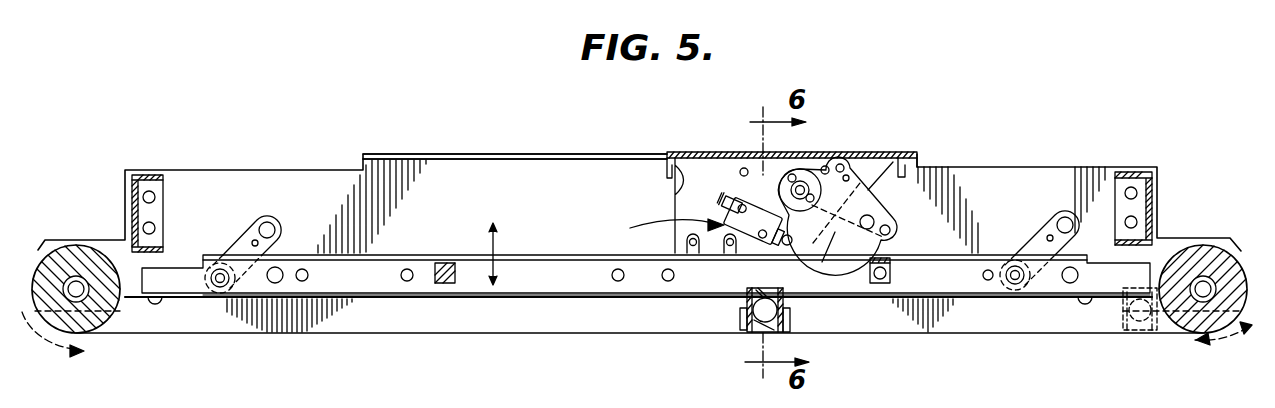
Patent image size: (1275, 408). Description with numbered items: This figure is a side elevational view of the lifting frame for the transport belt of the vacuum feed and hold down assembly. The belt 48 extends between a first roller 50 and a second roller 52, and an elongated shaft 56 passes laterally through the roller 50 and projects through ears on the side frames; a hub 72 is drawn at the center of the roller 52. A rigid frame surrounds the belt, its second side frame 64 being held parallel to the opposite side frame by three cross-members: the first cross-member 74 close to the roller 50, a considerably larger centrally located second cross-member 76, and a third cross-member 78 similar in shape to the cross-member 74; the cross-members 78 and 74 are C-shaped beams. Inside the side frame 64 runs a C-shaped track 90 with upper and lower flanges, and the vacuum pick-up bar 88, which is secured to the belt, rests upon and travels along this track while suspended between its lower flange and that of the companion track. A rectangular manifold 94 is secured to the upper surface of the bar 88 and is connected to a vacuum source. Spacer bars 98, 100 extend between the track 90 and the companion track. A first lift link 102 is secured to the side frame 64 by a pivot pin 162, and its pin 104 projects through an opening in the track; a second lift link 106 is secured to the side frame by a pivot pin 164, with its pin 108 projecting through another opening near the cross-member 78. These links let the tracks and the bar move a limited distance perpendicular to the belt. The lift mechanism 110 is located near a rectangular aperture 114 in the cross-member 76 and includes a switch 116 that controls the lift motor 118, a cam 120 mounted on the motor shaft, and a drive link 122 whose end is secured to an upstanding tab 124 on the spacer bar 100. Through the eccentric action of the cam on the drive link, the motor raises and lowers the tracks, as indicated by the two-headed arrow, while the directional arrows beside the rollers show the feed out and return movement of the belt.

The belt 48 is at (396, 330).
The first roller 50 is at (1208, 248).
The second roller 52 is at (95, 318).
The elongated shaft 56 is at (1200, 298).
The second side frame 64 is at (597, 196).
The roller shaft 72 is at (77, 277).
The first cross-member 74 is at (1152, 201).
The second cross-member 76 is at (699, 152).
The third cross-member 78 is at (130, 210).
The vacuum pick-up bar 88 is at (784, 333).
The C-shaped track 90 is at (826, 284).
The rectangular manifold 94 is at (745, 318).
The spacer bar 98 is at (447, 262).
The spacer bar 100 is at (892, 275).
The first lift link 102 is at (1034, 240).
The pin 104 is at (1018, 290).
The second lift link 106 is at (247, 243).
The pin 108 is at (220, 288).
The lift mechanism 110 is at (664, 230).
The rectangular aperture 114 is at (678, 188).
The switch 116 is at (737, 194).
The lift motor 118 is at (838, 249).
The cam 120 is at (803, 169).
The drive link 122 is at (868, 160).
The upstanding tab 124 is at (887, 247).
The pivot pin 162 is at (1065, 222).
The pivot pin 164 is at (268, 228).